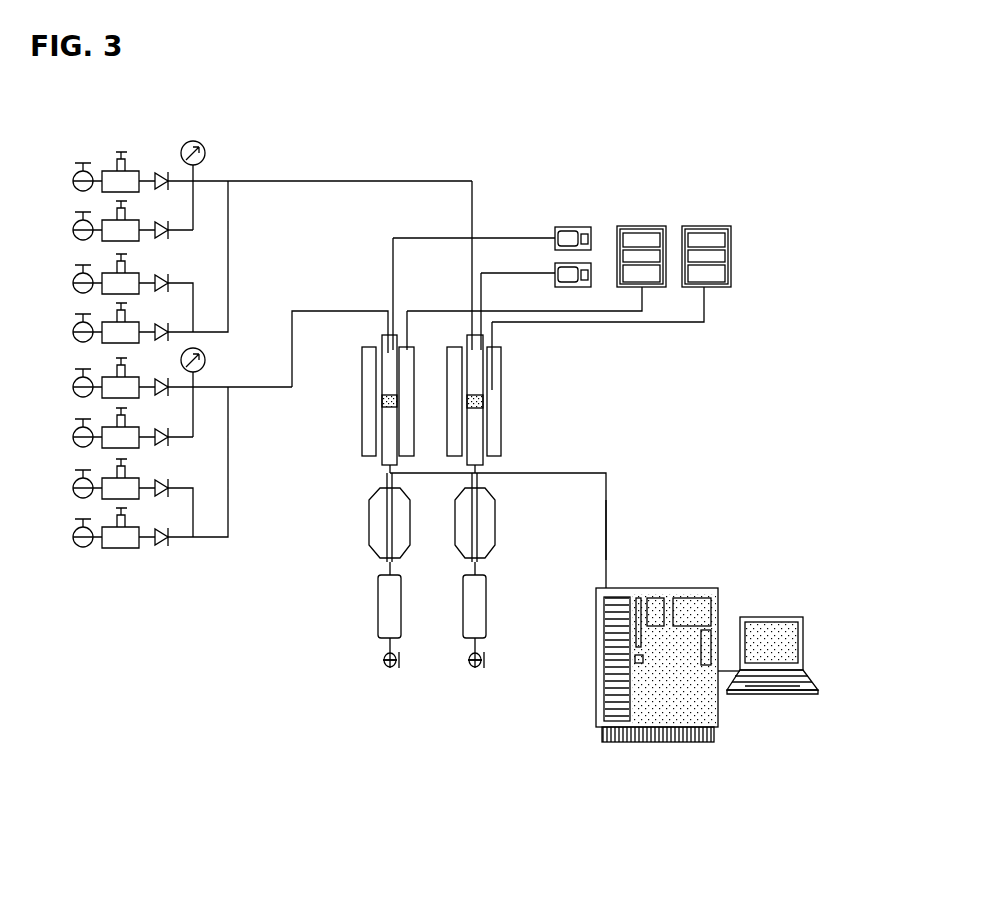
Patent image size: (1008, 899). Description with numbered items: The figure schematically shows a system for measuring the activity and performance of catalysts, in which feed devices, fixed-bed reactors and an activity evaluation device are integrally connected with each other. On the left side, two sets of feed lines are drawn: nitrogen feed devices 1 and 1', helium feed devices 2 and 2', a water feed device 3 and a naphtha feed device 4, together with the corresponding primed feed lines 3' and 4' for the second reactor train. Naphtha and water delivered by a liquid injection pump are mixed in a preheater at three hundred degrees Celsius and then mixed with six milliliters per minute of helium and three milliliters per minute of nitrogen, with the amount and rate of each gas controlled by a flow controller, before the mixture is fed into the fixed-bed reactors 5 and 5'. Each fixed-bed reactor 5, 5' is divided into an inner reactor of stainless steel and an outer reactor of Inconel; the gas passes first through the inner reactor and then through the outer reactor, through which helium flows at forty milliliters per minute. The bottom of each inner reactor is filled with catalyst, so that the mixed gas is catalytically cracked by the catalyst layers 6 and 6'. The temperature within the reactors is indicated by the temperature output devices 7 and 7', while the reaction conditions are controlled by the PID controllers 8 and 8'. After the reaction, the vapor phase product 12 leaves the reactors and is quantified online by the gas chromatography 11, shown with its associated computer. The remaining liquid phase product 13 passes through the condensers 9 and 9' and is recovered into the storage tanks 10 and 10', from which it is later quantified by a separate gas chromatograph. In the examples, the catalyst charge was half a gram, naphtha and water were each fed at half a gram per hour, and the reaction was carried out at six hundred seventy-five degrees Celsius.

The nitrogen feed device 1 is at (107, 172).
The helium feed device 2 is at (107, 221).
The water feed device 3 is at (107, 274).
The naphtha feed device 4 is at (107, 323).
The nitrogen feed device 1' is at (106, 378).
The helium feed device 2' is at (106, 428).
The gas feed line with valve, mass flow controller and check valve 3' is at (106, 479).
The gas feed line with valve, mass flow controller and check valve 4' is at (106, 528).
The fixed-bed reactor 5 is at (376, 404).
The fixed-bed reactor 5' is at (485, 404).
The catalyst layer 6 is at (473, 386).
The catalyst layer 6' is at (503, 388).
The temperature output device 7 is at (573, 222).
The temperature output device 7' is at (582, 240).
The PID controller 8 is at (641, 240).
The PID controller 8' is at (706, 240).
The condenser 9 is at (375, 524).
The condenser 9' is at (492, 524).
The storage tank 10 is at (368, 621).
The storage tank 10' is at (500, 621).
The gas chromatography 11 is at (657, 677).
The vapor phase product 12 is at (606, 528).
The liquid phase product 13 is at (466, 622).